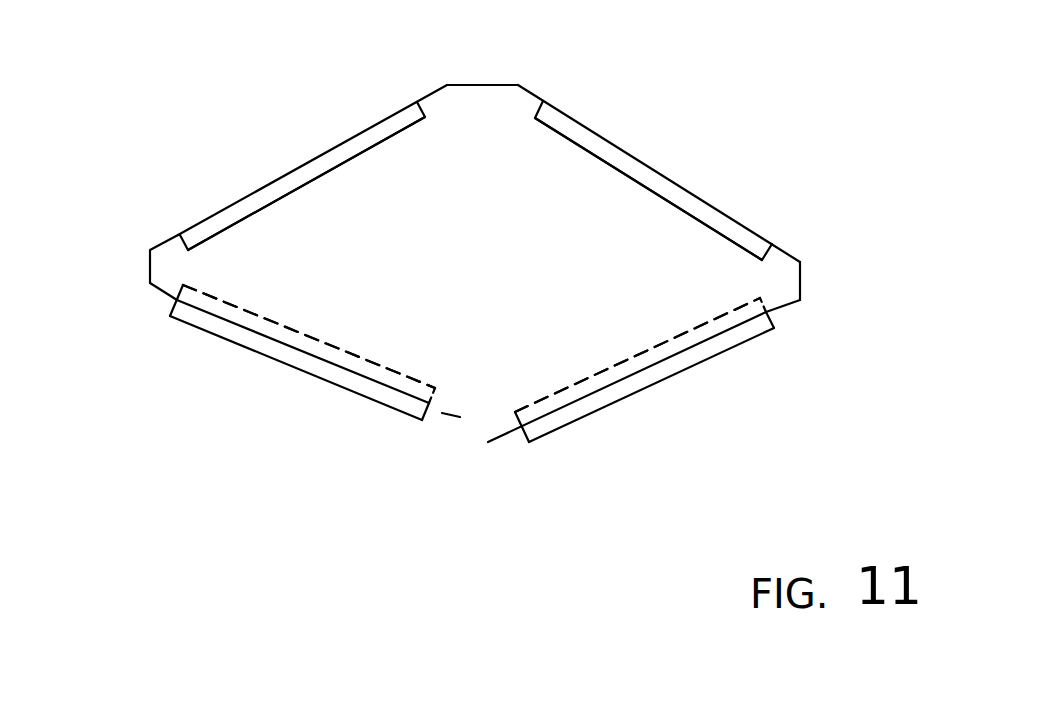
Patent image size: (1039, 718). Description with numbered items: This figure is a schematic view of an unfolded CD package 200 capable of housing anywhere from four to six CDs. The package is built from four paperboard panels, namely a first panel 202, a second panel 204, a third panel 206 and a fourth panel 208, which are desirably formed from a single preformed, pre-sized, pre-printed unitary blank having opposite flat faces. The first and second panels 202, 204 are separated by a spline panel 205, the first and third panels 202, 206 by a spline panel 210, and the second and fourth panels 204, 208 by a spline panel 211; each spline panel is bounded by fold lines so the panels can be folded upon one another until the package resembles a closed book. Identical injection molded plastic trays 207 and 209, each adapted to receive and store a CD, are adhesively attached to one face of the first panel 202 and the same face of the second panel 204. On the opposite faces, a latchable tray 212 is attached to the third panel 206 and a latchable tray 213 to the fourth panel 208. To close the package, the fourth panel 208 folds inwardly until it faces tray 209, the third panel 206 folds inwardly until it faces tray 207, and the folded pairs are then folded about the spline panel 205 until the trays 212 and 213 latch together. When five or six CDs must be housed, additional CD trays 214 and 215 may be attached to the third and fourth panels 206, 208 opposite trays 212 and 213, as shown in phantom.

The CD package 200 is at (595, 109).
The first panel 202 is at (252, 188).
The second panel 204 is at (688, 190).
The spline panel 205 is at (488, 85).
The third panel 206 is at (160, 290).
The tray 207 is at (290, 183).
The fourth panel 208 is at (790, 303).
The tray 209 is at (640, 178).
The spline panel 210 is at (150, 265).
The spline panel 211 is at (800, 273).
The latchable tray 212 is at (340, 382).
The latchable tray 213 is at (680, 367).
The additional CD tray 214 is at (287, 333).
The additional CD tray 215 is at (620, 360).